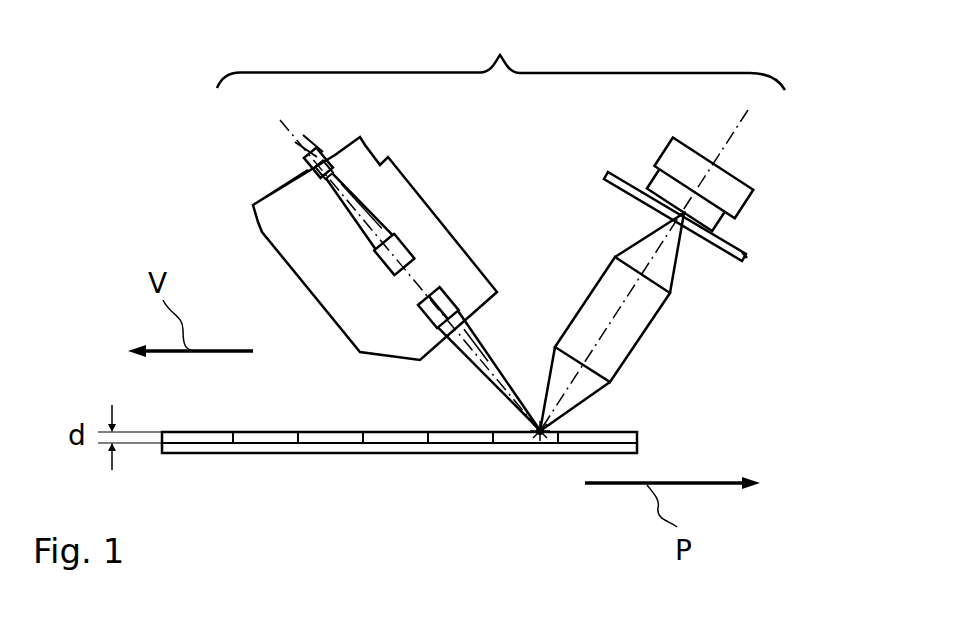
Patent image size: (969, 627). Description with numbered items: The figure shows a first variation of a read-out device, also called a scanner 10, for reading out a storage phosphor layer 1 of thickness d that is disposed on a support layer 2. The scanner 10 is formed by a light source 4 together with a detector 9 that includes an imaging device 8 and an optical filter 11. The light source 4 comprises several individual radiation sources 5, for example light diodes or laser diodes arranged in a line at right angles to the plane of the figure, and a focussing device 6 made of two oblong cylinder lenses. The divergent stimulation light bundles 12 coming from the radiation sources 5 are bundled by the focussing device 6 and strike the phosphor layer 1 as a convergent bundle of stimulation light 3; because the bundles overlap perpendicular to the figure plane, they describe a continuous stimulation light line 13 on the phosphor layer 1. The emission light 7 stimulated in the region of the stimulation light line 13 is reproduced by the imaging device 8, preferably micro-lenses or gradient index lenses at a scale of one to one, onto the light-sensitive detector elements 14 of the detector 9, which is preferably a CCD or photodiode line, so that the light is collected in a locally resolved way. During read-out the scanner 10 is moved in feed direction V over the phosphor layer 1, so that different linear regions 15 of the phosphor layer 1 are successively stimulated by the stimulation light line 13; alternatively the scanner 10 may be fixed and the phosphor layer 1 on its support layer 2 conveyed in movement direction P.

The phosphor layer 1 is at (632, 435).
The support layer 2 is at (237, 447).
The stimulation light 3 is at (467, 358).
The light source 4 is at (313, 268).
The individual radiation sources 5 is at (305, 165).
The focussing device 6 is at (453, 293).
The emission light 7 is at (583, 390).
The imaging device 8 is at (637, 318).
The detector 9 is at (702, 156).
The scanner 10 is at (501, 59).
The optical filter 11 is at (613, 167).
The stimulation light bundles 12 is at (357, 208).
The stimulation light line 13 is at (540, 442).
The light-sensitive detector elements 14 is at (753, 242).
The linear regions 15 is at (267, 438).